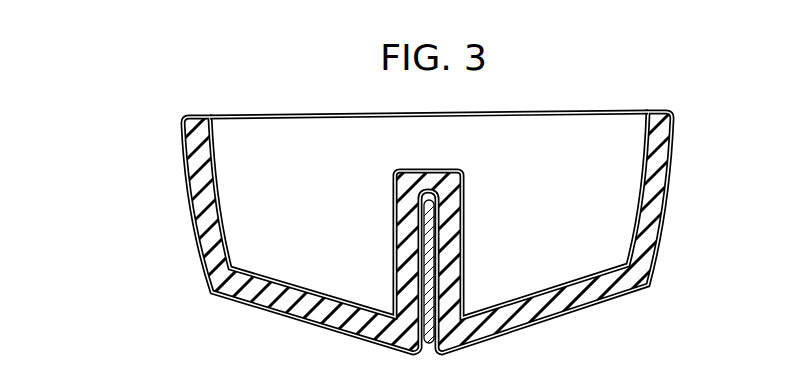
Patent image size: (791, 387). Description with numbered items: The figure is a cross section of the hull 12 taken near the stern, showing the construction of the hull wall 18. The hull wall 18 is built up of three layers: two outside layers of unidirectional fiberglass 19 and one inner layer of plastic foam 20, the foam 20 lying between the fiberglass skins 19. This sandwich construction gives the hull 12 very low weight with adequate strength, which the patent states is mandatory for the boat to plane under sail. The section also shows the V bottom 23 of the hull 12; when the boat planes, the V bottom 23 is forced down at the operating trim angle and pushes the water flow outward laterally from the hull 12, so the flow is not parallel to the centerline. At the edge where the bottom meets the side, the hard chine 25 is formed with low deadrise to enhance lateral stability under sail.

The hull 12 is at (395, 193).
The hull wall 18 is at (190, 177).
The unidirectional fiberglass 19 is at (190, 145).
The plastic foam 20 is at (285, 308).
The V bottom 23 is at (347, 331).
The hard chine 25 is at (212, 290).